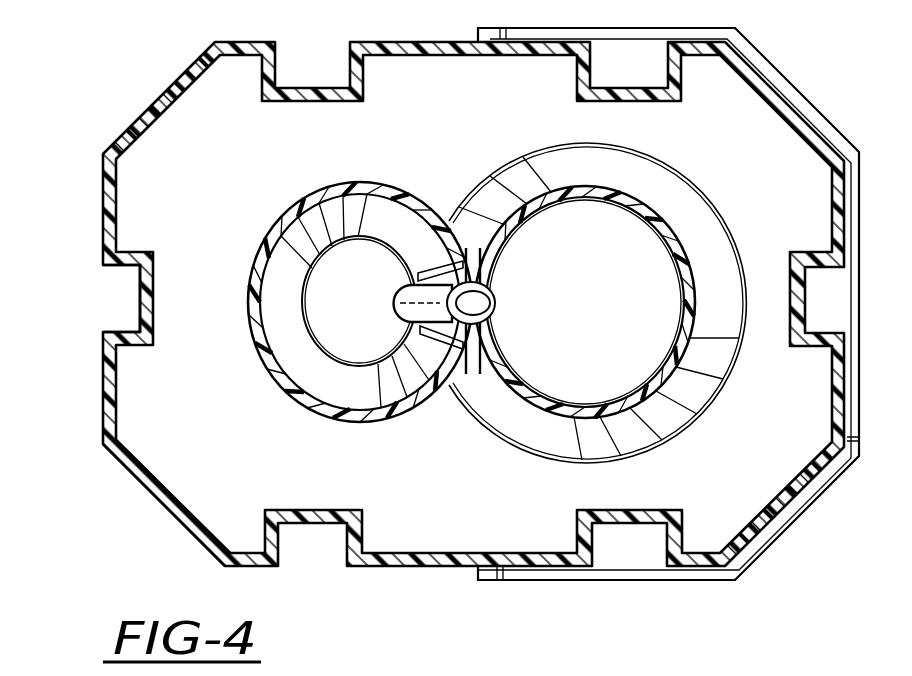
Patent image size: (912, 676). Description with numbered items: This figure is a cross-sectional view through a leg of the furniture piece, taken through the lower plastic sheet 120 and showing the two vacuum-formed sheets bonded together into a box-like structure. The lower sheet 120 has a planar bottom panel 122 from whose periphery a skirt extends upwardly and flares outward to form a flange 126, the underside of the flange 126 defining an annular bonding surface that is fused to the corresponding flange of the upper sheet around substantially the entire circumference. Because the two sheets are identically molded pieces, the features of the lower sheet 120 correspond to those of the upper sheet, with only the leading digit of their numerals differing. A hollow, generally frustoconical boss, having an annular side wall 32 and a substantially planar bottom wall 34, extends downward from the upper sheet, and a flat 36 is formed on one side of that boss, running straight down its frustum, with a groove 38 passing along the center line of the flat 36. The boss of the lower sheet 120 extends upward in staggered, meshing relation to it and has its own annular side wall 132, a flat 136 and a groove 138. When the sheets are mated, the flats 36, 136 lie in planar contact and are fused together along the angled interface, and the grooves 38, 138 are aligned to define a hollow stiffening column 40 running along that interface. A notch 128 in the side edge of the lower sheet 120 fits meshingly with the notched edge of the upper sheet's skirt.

The lower plastic sheet 120 is at (153, 103).
The flange 126 is at (798, 98).
The side notch 128 is at (140, 295).
The bottom panel 122 is at (200, 477).
The annular side wall 32 is at (278, 268).
The bottom wall 34 is at (328, 306).
The hollow stiffening column 40 is at (420, 290).
The groove 38 is at (432, 305).
The flat 36 is at (447, 333).
The annular side wall 132 is at (707, 238).
The groove 138 is at (503, 320).
The flat 136 is at (485, 337).